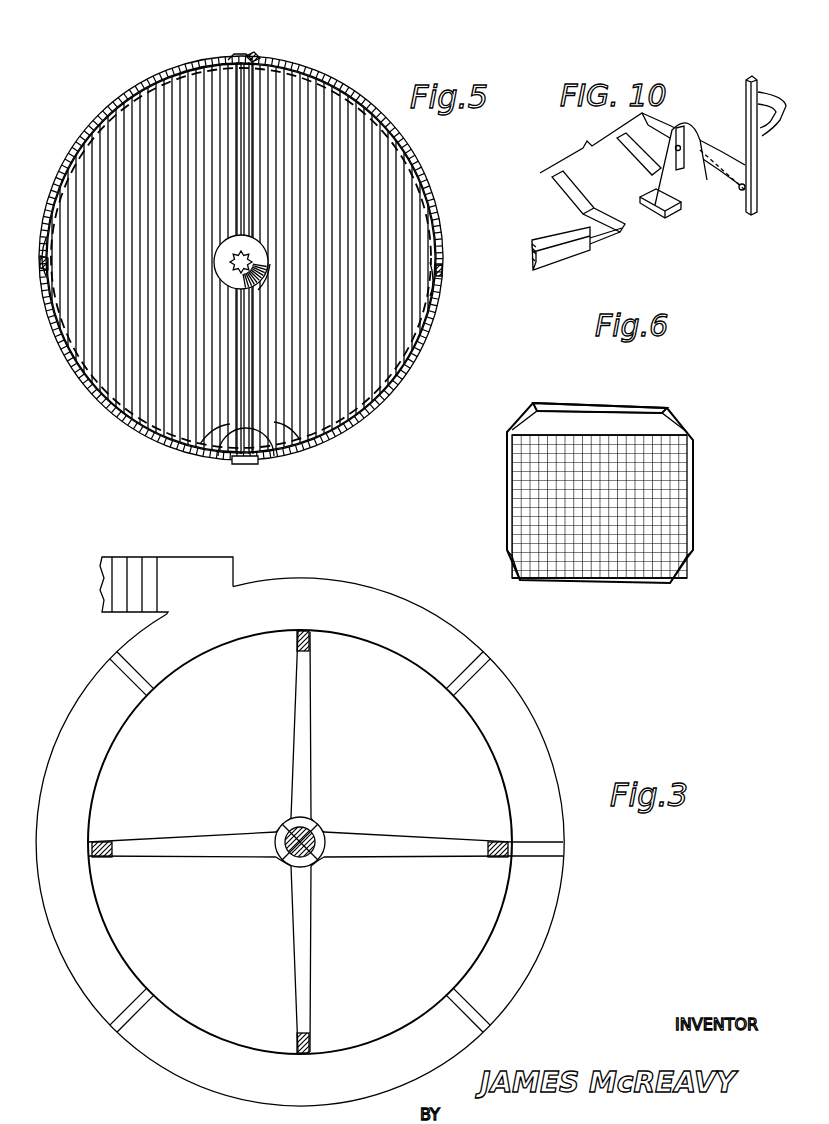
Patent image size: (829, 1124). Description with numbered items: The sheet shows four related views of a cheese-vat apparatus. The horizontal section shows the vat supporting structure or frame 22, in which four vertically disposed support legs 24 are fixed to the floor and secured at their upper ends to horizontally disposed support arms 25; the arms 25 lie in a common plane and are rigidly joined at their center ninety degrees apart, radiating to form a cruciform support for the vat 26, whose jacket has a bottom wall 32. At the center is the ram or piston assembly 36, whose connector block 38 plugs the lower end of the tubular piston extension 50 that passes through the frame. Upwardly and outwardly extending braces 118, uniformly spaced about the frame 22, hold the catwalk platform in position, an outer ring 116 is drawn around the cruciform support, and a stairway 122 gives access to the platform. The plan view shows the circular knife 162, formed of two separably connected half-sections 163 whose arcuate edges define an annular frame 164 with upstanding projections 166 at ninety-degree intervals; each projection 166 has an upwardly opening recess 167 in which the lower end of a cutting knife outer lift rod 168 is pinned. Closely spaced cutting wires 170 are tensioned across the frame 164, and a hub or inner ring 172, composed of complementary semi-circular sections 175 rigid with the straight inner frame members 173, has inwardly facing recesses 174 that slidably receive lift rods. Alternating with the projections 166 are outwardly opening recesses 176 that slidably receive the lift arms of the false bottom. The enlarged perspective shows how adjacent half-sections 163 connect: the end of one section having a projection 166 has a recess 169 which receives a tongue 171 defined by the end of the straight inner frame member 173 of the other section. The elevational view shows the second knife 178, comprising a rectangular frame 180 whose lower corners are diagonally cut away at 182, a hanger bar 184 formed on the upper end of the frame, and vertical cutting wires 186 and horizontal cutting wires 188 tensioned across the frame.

In FIG. 3, the vat supporting structure or frame 22 is at (384, 832).
In FIG. 3, the support legs 24 is at (296, 646).
In FIG. 3, the support arms 25 is at (308, 728).
In FIG. 3, the vat 26 is at (507, 747).
In FIG. 3, the bottom wall 32 is at (424, 959).
In FIG. 3, the ram or piston assembly 36 is at (322, 830).
In FIG. 3, the connector block 38 is at (292, 858).
In FIG. 3, the tubular piston extension 50 is at (284, 828).
In FIG. 3, the outer ring 116 is at (424, 608).
In FIG. 3, the braces 118 is at (470, 666).
In FIG. 3, the stairway 122 is at (138, 578).
In FIG. 5, the circular knife 162 is at (404, 197).
In FIG. 10, the circular knife 162 is at (533, 280).
In FIG. 5, the half-sections 163 is at (168, 66).
In FIG. 10, the half-sections 163 is at (764, 140).
In FIG. 5, the annular frame 164 is at (420, 150).
In FIG. 10, the annular frame 164 is at (546, 246).
In FIG. 5, the upstanding projections 166 is at (238, 54).
In FIG. 10, the upstanding projections 166 is at (700, 152).
In FIG. 10, the upwardly opening recesses 167 is at (680, 132).
In FIG. 5, the cutting knife outer lift rods 168 is at (256, 54).
In FIG. 10, the recess 169 is at (666, 212).
In FIG. 5, the cutting wires 170 is at (330, 428).
In FIG. 10, the tongue 171 is at (608, 236).
In FIG. 5, the hub or inner ring 172 is at (260, 292).
In FIG. 5, the straight inner frame member 173 is at (204, 444).
In FIG. 10, the straight inner frame member 173 is at (634, 147).
In FIG. 5, the recesses 174 is at (262, 267).
In FIG. 5, the semi-circular sections 175 is at (260, 256).
In FIG. 5, the outwardly opening recesses 176 is at (118, 102).
In FIG. 6, the second knife 178 is at (672, 471).
In FIG. 6, the rectangular frame 180 is at (570, 430).
In FIG. 6, the diagonally cut away lower corners 182 is at (506, 566).
In FIG. 6, the hanger bar 184 is at (634, 406).
In FIG. 6, the vertical cutting wires 186 is at (668, 514).
In FIG. 6, the horizontal cutting wires 188 is at (636, 560).